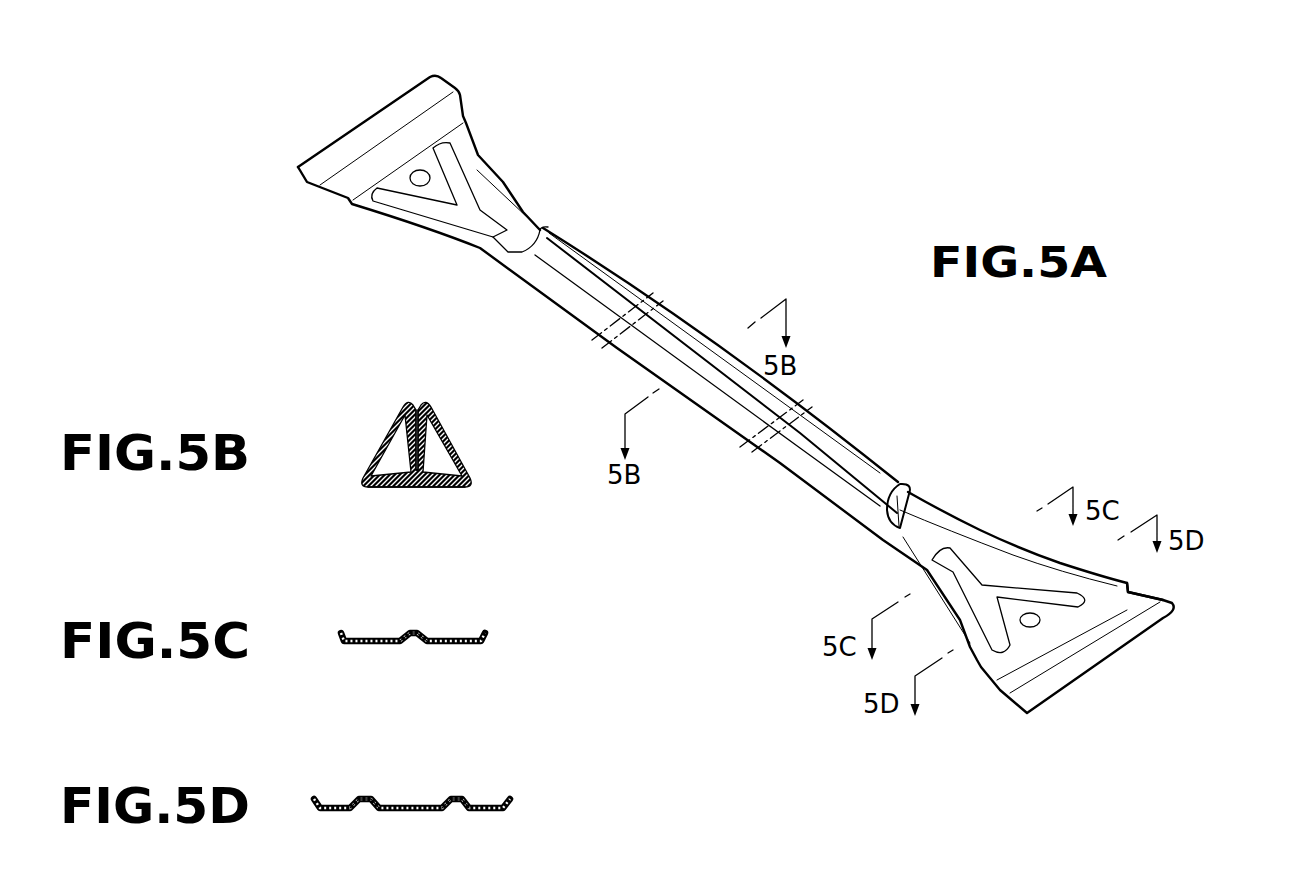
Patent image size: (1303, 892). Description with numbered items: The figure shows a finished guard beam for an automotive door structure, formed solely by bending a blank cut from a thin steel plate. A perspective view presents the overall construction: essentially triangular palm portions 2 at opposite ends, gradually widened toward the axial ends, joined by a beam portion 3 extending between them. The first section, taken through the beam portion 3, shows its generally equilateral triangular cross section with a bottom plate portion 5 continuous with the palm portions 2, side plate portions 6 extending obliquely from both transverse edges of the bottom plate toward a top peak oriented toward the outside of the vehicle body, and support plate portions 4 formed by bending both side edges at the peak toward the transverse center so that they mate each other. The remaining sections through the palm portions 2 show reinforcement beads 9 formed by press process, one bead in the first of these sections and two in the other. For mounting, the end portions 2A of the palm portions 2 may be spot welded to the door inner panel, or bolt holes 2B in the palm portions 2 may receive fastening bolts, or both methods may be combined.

In FIG. 5A, the palm portion 2 is at (379, 75).
In FIG. 5C, the palm portion 2 is at (413, 636).
In FIG. 5D, the palm portion 2 is at (412, 802).
In FIG. 5A, the end portion 2A is at (347, 142).
In FIG. 5A, the bolt hole 2B is at (428, 172).
In FIG. 5A, the beam portion 3 is at (704, 301).
In FIG. 5B, the beam portion 3 is at (422, 432).
In FIG. 5B, the support plate portion 4 is at (425, 462).
In FIG. 5B, the bottom plate portion 5 is at (428, 487).
In FIG. 5B, the side plate portion 6 is at (382, 437).
In FIG. 5A, the reinforcement bead 9 is at (948, 563).
In FIG. 5C, the reinforcement bead 9 is at (413, 631).
In FIG. 5D, the reinforcement bead 9 is at (365, 796).